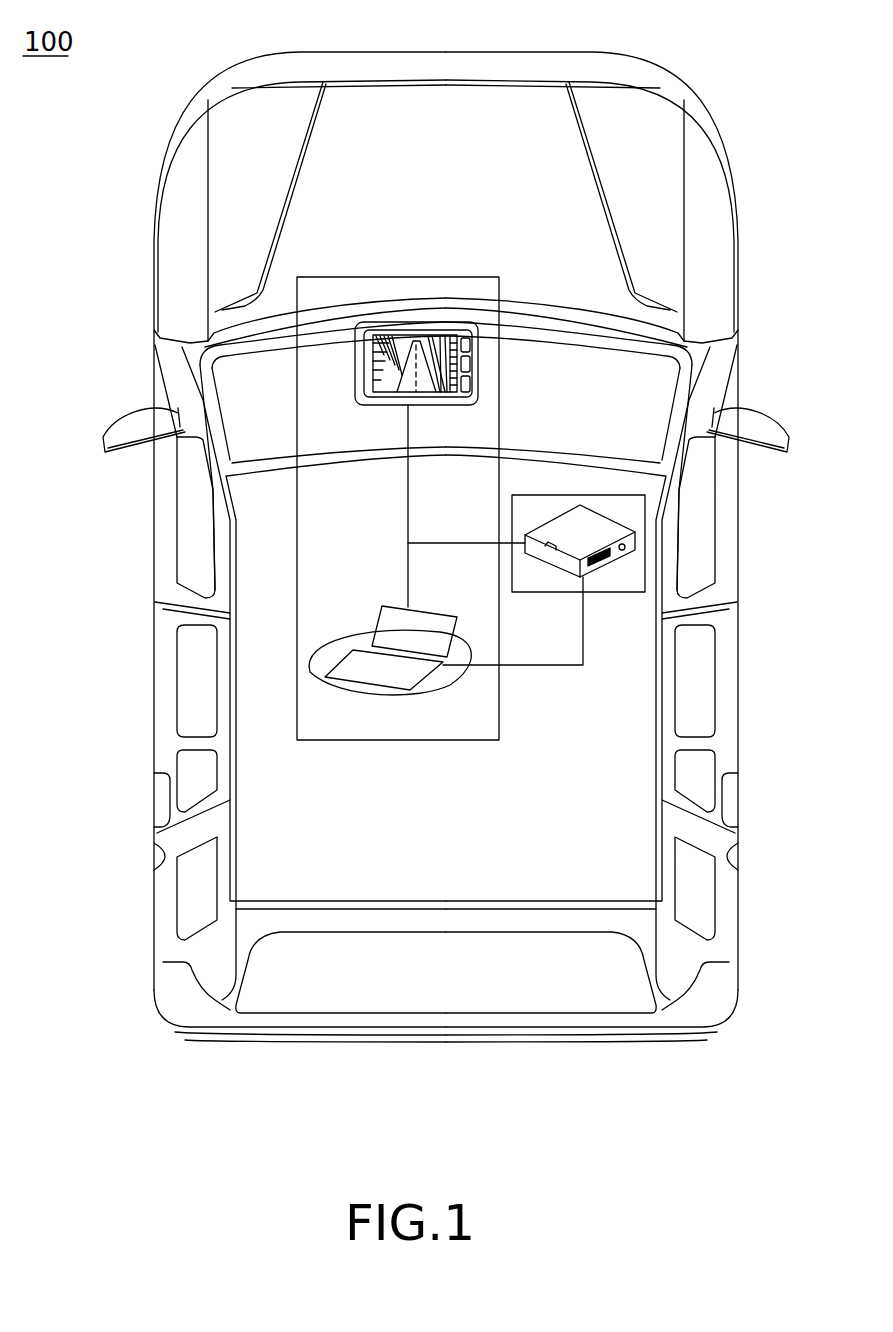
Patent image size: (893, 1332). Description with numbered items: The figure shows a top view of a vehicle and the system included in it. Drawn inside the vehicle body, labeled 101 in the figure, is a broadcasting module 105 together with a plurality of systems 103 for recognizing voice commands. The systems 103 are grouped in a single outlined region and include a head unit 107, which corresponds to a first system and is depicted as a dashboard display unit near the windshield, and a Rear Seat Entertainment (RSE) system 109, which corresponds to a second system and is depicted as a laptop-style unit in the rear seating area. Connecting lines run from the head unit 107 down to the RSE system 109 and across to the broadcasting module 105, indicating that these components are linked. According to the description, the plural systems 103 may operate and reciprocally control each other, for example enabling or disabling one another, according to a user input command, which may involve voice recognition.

The vehicle 101 is at (557, 1023).
The systems 103 is at (398, 740).
The broadcasting module 105 is at (640, 577).
The head unit 107 is at (493, 300).
The Rear Seat Entertainment (RSE) system 109 is at (390, 667).